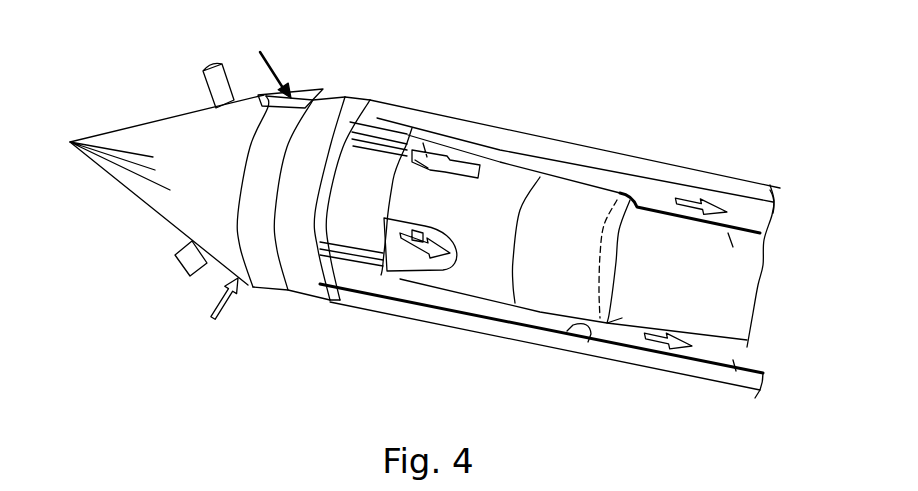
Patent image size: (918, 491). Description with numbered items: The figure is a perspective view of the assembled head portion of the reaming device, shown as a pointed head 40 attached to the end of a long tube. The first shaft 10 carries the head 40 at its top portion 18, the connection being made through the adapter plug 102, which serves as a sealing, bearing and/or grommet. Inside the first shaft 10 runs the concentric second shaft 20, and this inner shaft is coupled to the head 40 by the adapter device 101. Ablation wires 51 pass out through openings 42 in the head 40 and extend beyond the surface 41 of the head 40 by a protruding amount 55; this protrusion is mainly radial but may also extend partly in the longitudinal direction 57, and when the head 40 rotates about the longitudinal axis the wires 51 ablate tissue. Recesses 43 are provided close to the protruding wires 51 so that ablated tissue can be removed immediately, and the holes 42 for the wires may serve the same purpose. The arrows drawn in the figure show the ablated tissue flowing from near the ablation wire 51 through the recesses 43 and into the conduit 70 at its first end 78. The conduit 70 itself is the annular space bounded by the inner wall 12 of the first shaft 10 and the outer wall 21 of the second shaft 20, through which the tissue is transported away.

The first shaft 10 is at (498, 327).
The inner wall of the first shaft 12 is at (590, 334).
The top portion of the first shaft 18 is at (388, 118).
The second shaft 20 is at (767, 187).
The outer wall of the second shaft 21 is at (634, 322).
The head 40 is at (127, 137).
The surface of the head 41 is at (165, 106).
The opening 42 is at (205, 490).
The recess 43 is at (293, 97).
The ablation wire 51 is at (210, 68).
The protruding amount 55 is at (266, 86).
The longitudinal direction 57 is at (146, 481).
The conduit 70 is at (744, 400).
The first end of the conduit 78 is at (437, 293).
The adapter device 101 is at (577, 190).
The adapter plug 102 is at (300, 285).